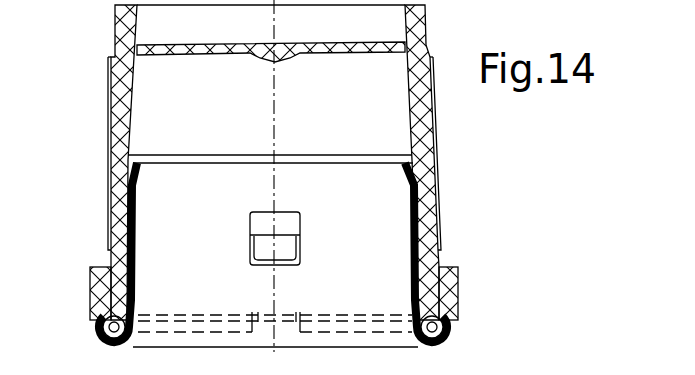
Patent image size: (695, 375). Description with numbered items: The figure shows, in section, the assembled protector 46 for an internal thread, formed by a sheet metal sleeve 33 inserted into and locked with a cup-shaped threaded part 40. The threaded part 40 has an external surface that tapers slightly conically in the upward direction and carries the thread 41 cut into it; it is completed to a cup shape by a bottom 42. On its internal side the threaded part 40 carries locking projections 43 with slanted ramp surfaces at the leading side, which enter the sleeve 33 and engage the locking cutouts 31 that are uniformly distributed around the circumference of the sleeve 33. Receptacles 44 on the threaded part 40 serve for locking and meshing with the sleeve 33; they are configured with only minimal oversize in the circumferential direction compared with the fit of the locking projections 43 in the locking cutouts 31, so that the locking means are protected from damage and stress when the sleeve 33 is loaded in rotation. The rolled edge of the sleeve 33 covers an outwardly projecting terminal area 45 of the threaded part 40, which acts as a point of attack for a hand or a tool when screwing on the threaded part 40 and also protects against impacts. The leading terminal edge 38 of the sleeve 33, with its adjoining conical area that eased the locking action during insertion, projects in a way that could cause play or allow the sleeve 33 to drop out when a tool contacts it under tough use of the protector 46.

The locking cutouts 31 is at (256, 263).
The sleeve 33 is at (210, 226).
The leading terminal edge 38 is at (205, 165).
The threaded part 40 is at (108, 78).
The thread 41 is at (106, 153).
The bottom 42 is at (328, 56).
The locking projections 43 is at (280, 225).
The receptacles 44 is at (454, 328).
The outwardly projecting terminal area 45 is at (90, 288).
The protector 46 is at (507, 163).